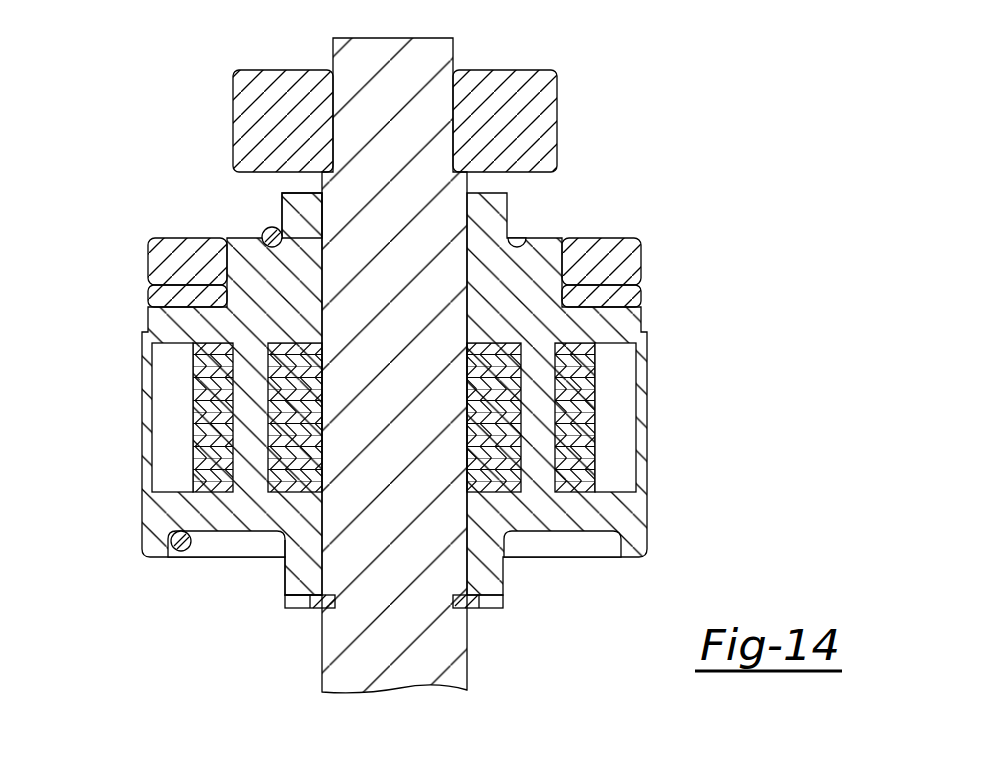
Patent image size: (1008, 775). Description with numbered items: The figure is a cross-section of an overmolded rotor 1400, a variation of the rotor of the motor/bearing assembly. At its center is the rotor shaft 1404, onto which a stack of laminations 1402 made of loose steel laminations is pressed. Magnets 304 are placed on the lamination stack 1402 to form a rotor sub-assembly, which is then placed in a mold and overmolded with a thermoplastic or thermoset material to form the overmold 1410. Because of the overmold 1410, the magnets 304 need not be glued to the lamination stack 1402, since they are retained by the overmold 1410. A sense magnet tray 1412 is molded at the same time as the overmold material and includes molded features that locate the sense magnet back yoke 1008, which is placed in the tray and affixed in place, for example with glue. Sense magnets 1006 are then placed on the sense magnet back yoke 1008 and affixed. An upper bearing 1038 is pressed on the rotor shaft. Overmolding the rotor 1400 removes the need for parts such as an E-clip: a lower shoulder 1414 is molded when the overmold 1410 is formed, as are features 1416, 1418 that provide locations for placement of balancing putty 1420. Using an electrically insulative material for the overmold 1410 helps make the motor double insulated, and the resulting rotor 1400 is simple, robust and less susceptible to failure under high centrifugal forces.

The magnets 304 is at (167, 415).
The sense magnets 1006 is at (156, 268).
The sense magnet back yoke 1008 is at (157, 297).
The upper bearing 1038 is at (528, 77).
The rotor 1400 is at (628, 78).
The stack of laminations 1402 is at (193, 396).
The rotor shaft 1404 is at (332, 672).
The overmold 1410 is at (293, 585).
The sense magnet tray 1412 is at (628, 319).
The lower shoulder 1414 is at (475, 610).
The feature 1416 is at (277, 516).
The feature 1418 is at (283, 250).
The balancing putty 1420 is at (262, 234).